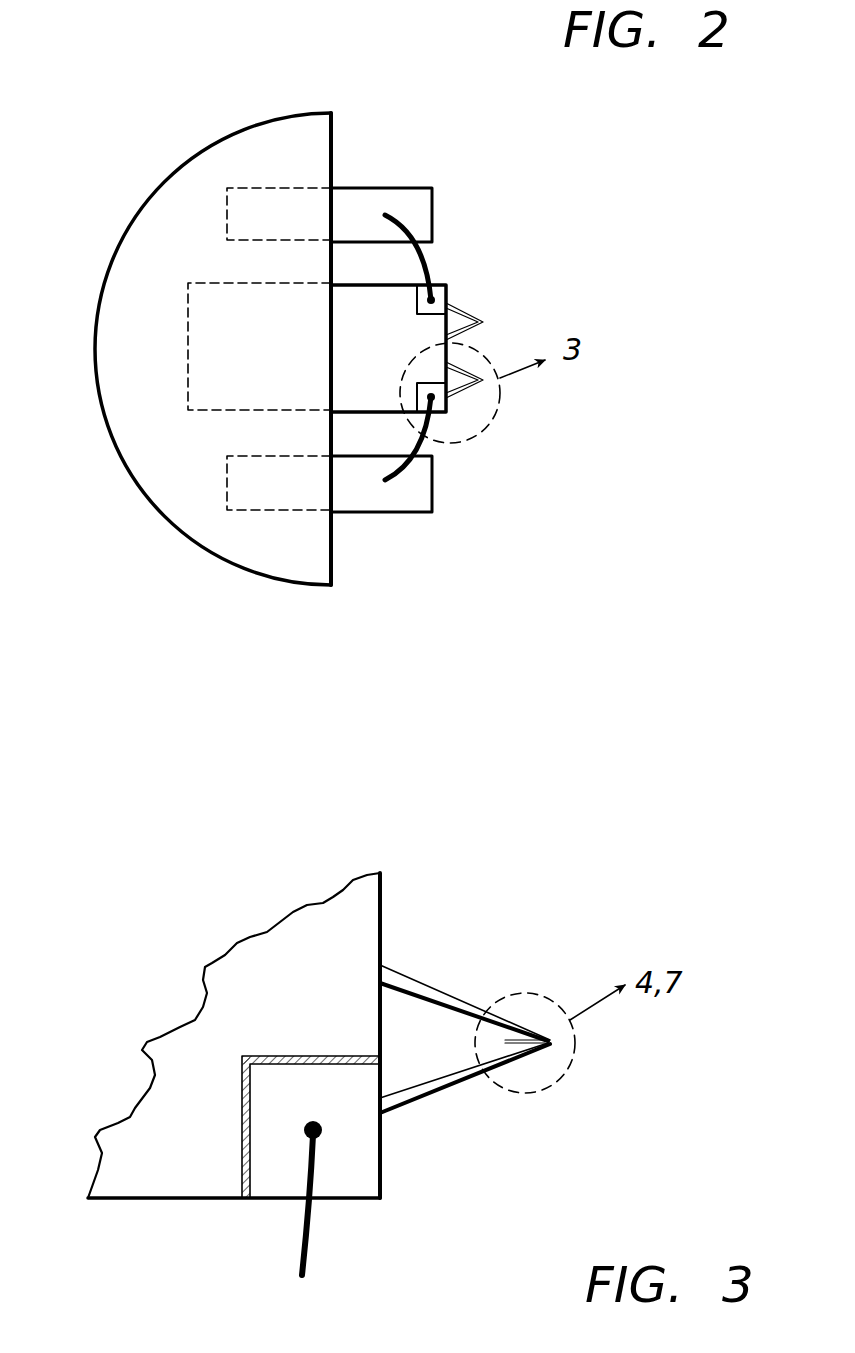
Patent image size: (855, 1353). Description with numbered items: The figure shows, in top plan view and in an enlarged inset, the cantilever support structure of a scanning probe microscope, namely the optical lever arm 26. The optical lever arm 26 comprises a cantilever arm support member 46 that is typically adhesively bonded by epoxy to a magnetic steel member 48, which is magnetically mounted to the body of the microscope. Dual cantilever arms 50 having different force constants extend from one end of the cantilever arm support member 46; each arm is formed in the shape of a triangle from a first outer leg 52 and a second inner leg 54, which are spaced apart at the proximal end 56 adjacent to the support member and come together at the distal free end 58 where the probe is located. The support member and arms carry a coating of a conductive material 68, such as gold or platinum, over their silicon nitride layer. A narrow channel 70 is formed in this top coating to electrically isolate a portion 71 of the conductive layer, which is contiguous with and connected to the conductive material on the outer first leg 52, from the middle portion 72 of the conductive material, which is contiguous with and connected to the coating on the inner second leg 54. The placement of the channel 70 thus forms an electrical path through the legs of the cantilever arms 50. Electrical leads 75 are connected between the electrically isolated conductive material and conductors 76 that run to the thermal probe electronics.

In FIG. 2, the optical lever arm 26 is at (540, 238).
In FIG. 2, the cantilever arm support member 46 is at (212, 363).
In FIG. 3, the cantilever arm support member 46 is at (260, 965).
In FIG. 2, the magnetic steel member 48 is at (137, 272).
In FIG. 2, the cantilever arms 50 is at (483, 322).
In FIG. 3, the cantilever arms 50 is at (513, 1037).
In FIG. 3, the first outer leg 52 is at (447, 1082).
In FIG. 3, the second inner leg 54 is at (420, 985).
In FIG. 3, the proximal end 56 is at (392, 1125).
In FIG. 3, the distal free end 58 is at (565, 1045).
In FIG. 3, the coating of conductive material 68 is at (385, 903).
In FIG. 3, the narrow channel 70 is at (300, 1055).
In FIG. 3, the electrically isolated portion of conductive layer 71 is at (390, 1190).
In FIG. 3, the middle portion of conductive material 72 is at (385, 1012).
In FIG. 2, the electrical leads 75 is at (433, 270).
In FIG. 3, the electrical leads 75 is at (318, 1235).
In FIG. 2, the conductors 76 is at (368, 190).